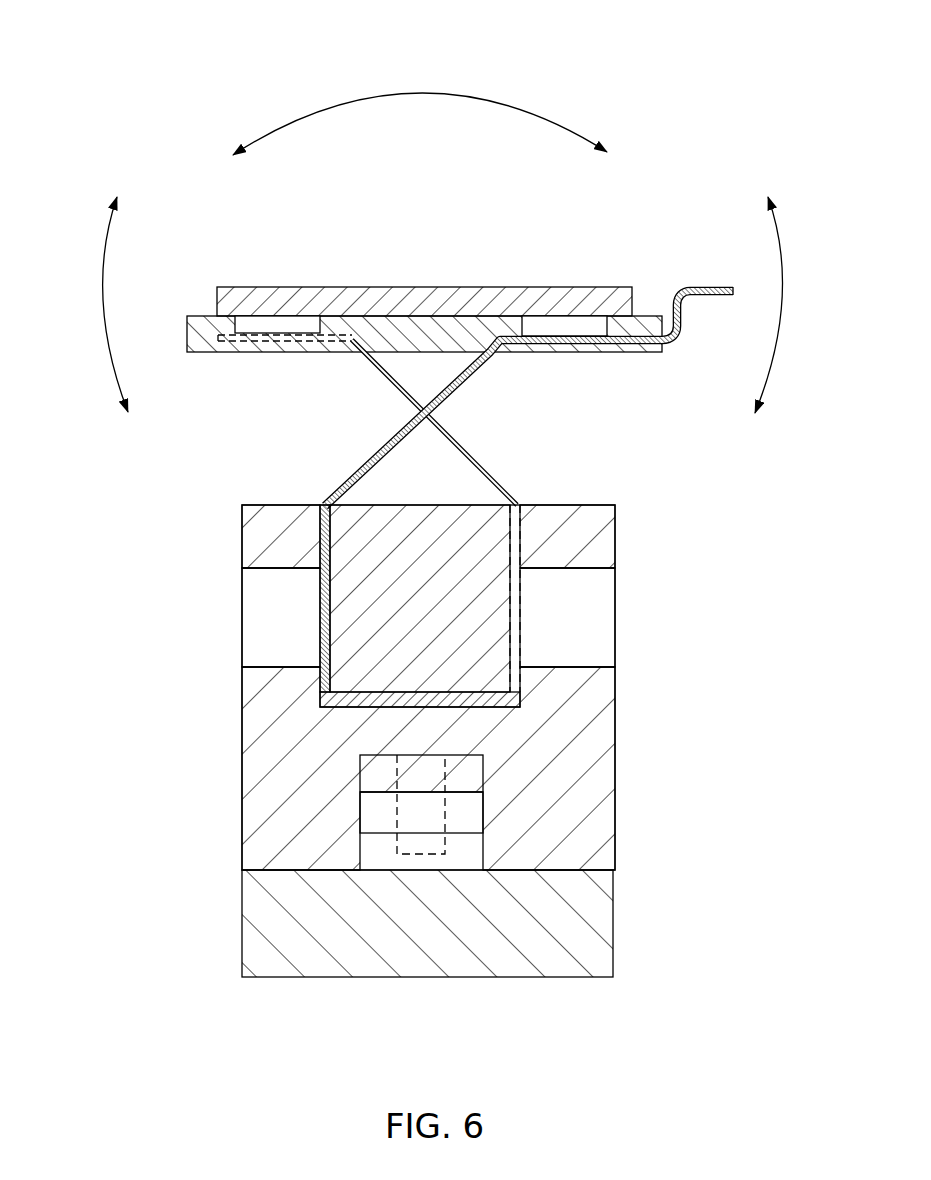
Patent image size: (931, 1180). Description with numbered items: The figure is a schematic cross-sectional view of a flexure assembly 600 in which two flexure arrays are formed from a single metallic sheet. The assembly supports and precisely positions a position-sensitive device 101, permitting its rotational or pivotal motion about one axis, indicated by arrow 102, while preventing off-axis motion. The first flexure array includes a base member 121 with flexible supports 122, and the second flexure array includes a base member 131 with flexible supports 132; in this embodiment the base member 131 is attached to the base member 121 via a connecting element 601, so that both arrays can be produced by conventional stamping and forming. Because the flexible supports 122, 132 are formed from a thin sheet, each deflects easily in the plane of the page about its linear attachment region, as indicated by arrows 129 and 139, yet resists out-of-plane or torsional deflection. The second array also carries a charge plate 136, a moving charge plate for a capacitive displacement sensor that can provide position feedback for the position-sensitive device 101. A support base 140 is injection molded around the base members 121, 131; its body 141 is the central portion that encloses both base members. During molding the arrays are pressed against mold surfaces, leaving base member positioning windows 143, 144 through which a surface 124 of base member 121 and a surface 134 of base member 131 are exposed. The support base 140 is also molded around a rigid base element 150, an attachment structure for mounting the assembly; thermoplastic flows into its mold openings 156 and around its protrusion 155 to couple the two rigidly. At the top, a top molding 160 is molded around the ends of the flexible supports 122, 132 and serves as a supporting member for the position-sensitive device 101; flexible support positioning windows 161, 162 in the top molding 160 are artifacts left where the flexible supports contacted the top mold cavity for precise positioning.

The flexure assembly 600 is at (200, 62).
The arrow 102 is at (485, 100).
The position-sensitive device 101 is at (436, 287).
The top molding 160 is at (215, 355).
The flexible support positioning window 161 is at (268, 318).
The flexible support positioning window 162 is at (575, 328).
The charge plate 136 is at (700, 287).
The arrow 139 is at (782, 292).
The arrow 129 is at (103, 300).
The flexible support 132 is at (378, 440).
The flexible support 122 is at (455, 437).
The base member 131 is at (330, 600).
The base member 121 is at (510, 572).
The body 141 is at (436, 553).
The surface 134 is at (320, 600).
The surface 124 is at (520, 608).
The base member positioning window 143 is at (278, 642).
The base member positioning window 144 is at (570, 645).
The support base 140 is at (615, 725).
The connecting element 601 is at (355, 712).
The protrusion 155 is at (483, 772).
The mold opening 156 is at (380, 835).
The rigid base element 150 is at (436, 956).